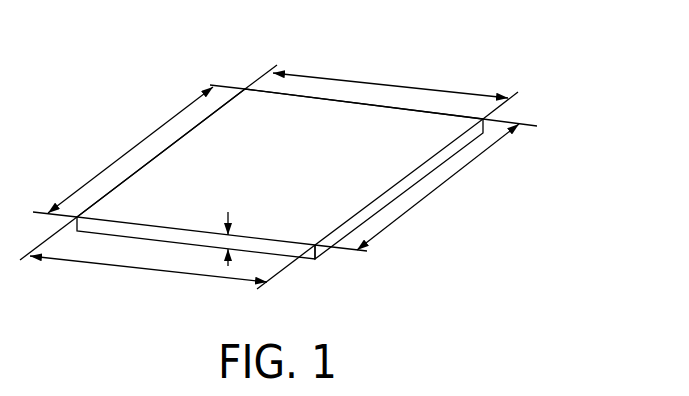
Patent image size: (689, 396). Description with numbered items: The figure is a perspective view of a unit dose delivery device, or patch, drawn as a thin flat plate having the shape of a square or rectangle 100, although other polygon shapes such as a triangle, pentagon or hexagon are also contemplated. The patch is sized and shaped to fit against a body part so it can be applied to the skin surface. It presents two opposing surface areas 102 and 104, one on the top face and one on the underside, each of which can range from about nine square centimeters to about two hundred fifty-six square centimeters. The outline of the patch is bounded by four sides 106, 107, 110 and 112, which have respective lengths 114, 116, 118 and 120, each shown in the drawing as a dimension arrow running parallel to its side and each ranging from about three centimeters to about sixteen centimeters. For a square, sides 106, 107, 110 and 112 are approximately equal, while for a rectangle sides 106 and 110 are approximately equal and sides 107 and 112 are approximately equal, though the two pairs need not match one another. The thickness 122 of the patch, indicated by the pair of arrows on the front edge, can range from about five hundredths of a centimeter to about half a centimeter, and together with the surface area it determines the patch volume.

The square or rectangle 100 is at (565, 162).
The surface area 102 is at (290, 140).
The surface area 104 is at (320, 270).
The side 106 is at (196, 128).
The side 107 is at (327, 100).
The side 110 is at (387, 194).
The side 112 is at (117, 223).
The length 114 is at (113, 163).
The length 116 is at (388, 85).
The length 118 is at (457, 177).
The length 120 is at (153, 272).
The thickness 122 is at (228, 212).